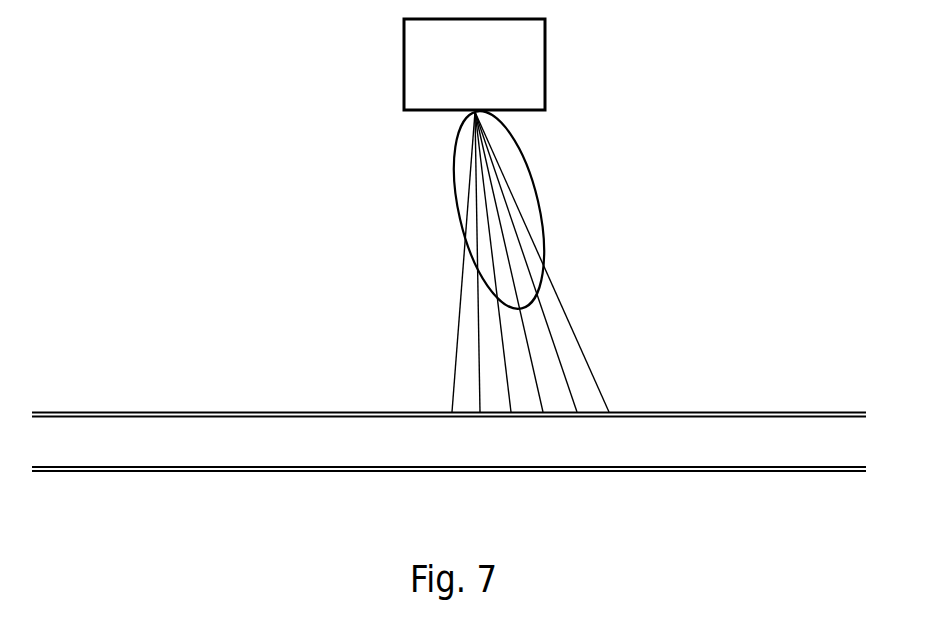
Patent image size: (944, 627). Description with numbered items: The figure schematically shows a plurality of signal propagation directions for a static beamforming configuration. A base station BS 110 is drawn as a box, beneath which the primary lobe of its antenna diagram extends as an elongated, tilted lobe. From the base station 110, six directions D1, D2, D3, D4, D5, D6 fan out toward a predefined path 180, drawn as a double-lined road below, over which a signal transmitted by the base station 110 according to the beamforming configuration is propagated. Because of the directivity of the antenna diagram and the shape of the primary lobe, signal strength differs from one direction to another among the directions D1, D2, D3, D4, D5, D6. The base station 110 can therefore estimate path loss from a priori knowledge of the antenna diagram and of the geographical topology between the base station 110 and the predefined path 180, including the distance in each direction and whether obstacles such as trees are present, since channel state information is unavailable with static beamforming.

The base station 110 is at (545, 67).
The predefined path 180 is at (210, 471).
The signal propagation direction D1 is at (452, 278).
The signal propagation direction D2 is at (478, 278).
The signal propagation direction D3 is at (501, 278).
The signal propagation direction D4 is at (518, 278).
The signal propagation direction D5 is at (535, 278).
The signal propagation direction D6 is at (552, 278).